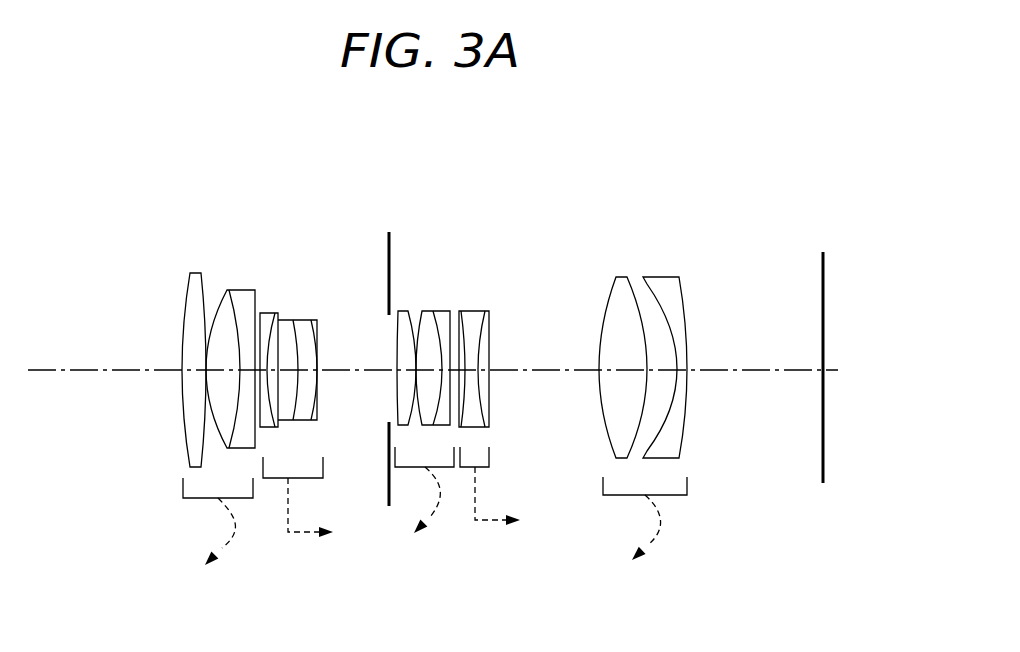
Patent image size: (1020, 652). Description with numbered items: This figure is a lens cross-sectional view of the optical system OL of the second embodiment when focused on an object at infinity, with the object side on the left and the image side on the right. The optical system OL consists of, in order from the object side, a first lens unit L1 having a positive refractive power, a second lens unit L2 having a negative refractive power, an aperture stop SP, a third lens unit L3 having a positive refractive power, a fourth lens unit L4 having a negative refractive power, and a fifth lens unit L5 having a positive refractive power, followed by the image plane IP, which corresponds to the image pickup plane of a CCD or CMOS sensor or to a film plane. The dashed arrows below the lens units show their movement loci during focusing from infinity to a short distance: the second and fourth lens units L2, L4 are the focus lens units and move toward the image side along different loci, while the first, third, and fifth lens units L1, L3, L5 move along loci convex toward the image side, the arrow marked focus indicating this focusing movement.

The optical system OL is at (690, 160).
The first lens unit L1 is at (177, 259).
The second lens unit L2 is at (259, 259).
The aperture stop SP is at (389, 258).
The third lens unit L3 is at (453, 259).
The fourth lens unit L4 is at (489, 259).
The fifth lens unit L5 is at (687, 259).
The image plane IP is at (825, 275).